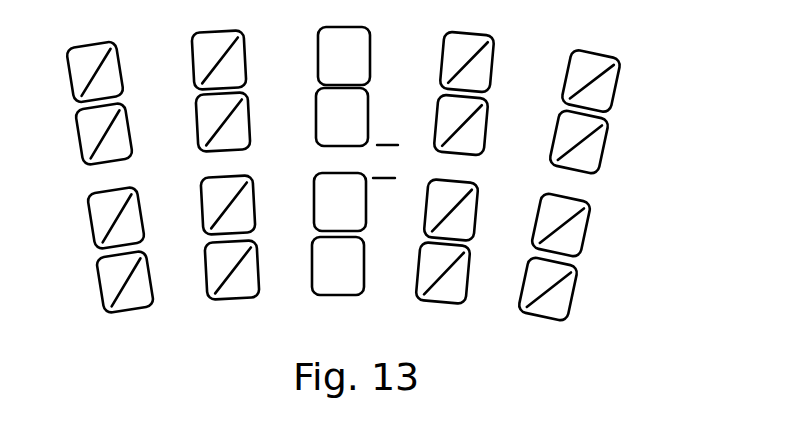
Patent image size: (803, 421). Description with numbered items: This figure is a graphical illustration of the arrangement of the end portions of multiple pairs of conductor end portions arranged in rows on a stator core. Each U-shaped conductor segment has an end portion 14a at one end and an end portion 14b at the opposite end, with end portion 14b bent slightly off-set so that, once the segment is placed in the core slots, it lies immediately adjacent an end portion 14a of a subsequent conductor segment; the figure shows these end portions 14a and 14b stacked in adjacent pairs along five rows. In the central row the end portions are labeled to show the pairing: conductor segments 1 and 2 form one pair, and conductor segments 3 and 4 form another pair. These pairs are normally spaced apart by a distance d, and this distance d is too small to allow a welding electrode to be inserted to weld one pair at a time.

The end portion 14a is at (623, 92).
The end portion 14b is at (605, 158).
The conductor segment 1 is at (344, 56).
The conductor segment 2 is at (342, 117).
The conductor segment 3 is at (340, 202).
The conductor segment 4 is at (338, 266).
The distance d is at (386, 163).